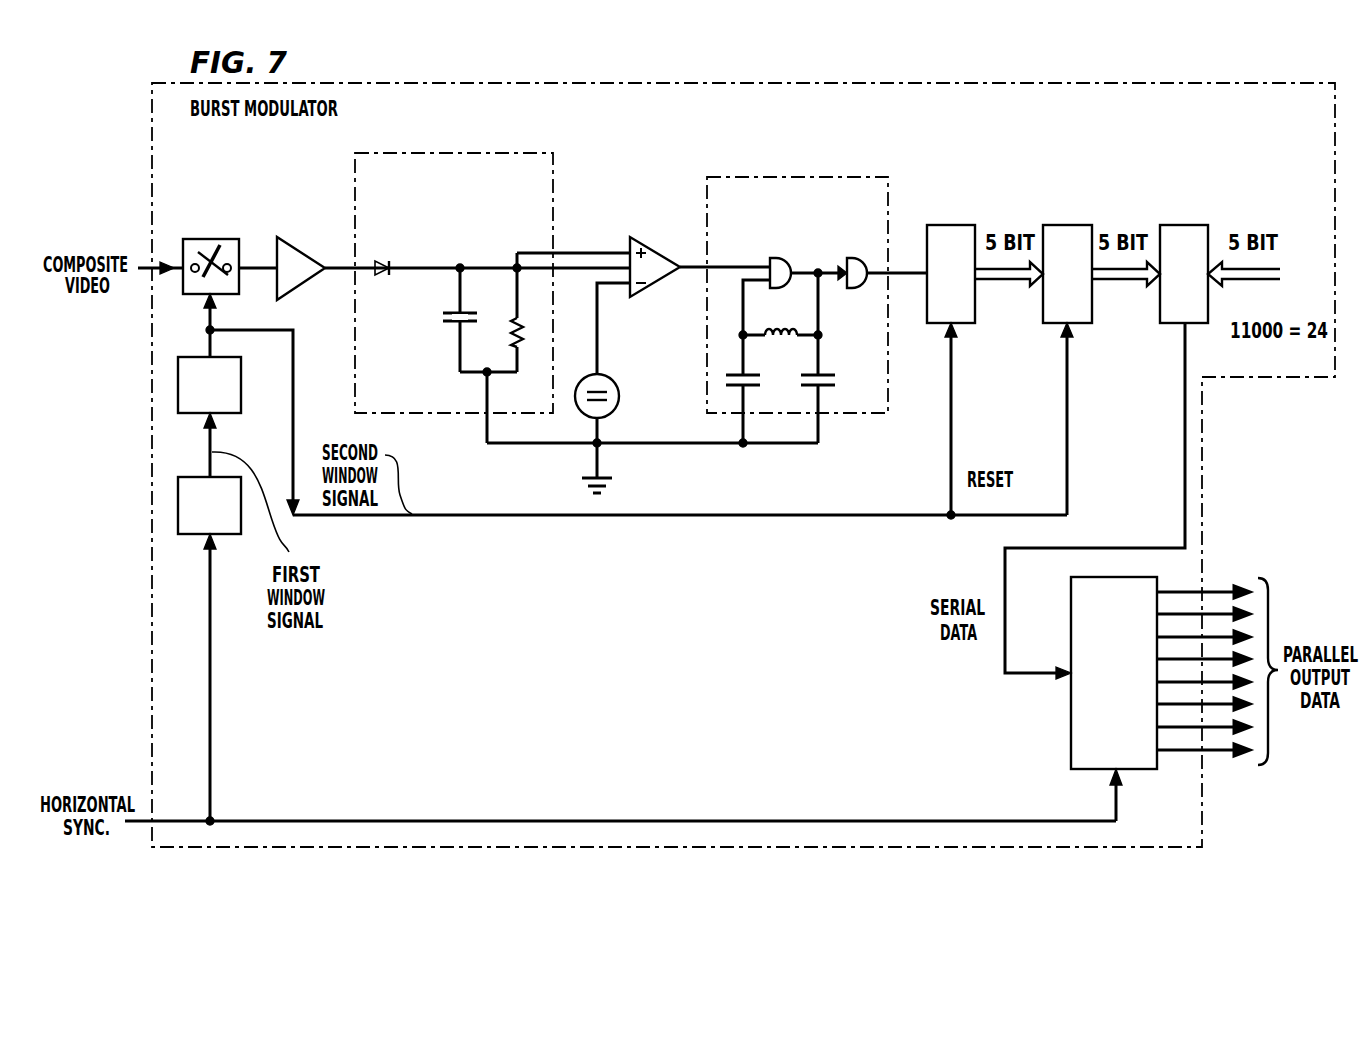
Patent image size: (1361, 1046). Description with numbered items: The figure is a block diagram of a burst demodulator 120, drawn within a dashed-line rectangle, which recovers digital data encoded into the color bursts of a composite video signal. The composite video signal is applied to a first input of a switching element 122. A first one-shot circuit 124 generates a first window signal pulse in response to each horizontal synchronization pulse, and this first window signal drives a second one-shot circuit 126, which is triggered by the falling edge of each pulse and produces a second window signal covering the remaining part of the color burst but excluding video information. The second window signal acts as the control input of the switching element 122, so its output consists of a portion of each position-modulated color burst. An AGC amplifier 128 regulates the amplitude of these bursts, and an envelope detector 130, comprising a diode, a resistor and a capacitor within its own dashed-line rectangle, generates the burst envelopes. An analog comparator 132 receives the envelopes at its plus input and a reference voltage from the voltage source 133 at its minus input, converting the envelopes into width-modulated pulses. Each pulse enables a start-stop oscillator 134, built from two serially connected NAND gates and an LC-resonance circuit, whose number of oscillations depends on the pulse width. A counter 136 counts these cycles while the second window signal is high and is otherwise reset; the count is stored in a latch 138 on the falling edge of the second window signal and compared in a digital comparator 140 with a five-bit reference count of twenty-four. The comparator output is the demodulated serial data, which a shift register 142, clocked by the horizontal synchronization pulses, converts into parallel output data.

The burst demodulator 120 is at (440, 131).
The switching element 122 is at (211, 239).
The first one-shot circuit 124 is at (178, 515).
The second one-shot circuit 126 is at (178, 390).
The AGC amplifier 128 is at (304, 249).
The envelope detector 130 is at (492, 273).
The analog comparator 132 is at (641, 241).
The voltage source 133 is at (611, 378).
The start-stop oscillator 134 is at (831, 177).
The counter 136 is at (949, 225).
The latch 138 is at (1060, 225).
The digital comparator 140 is at (1175, 225).
The shift register 142 is at (1070, 743).